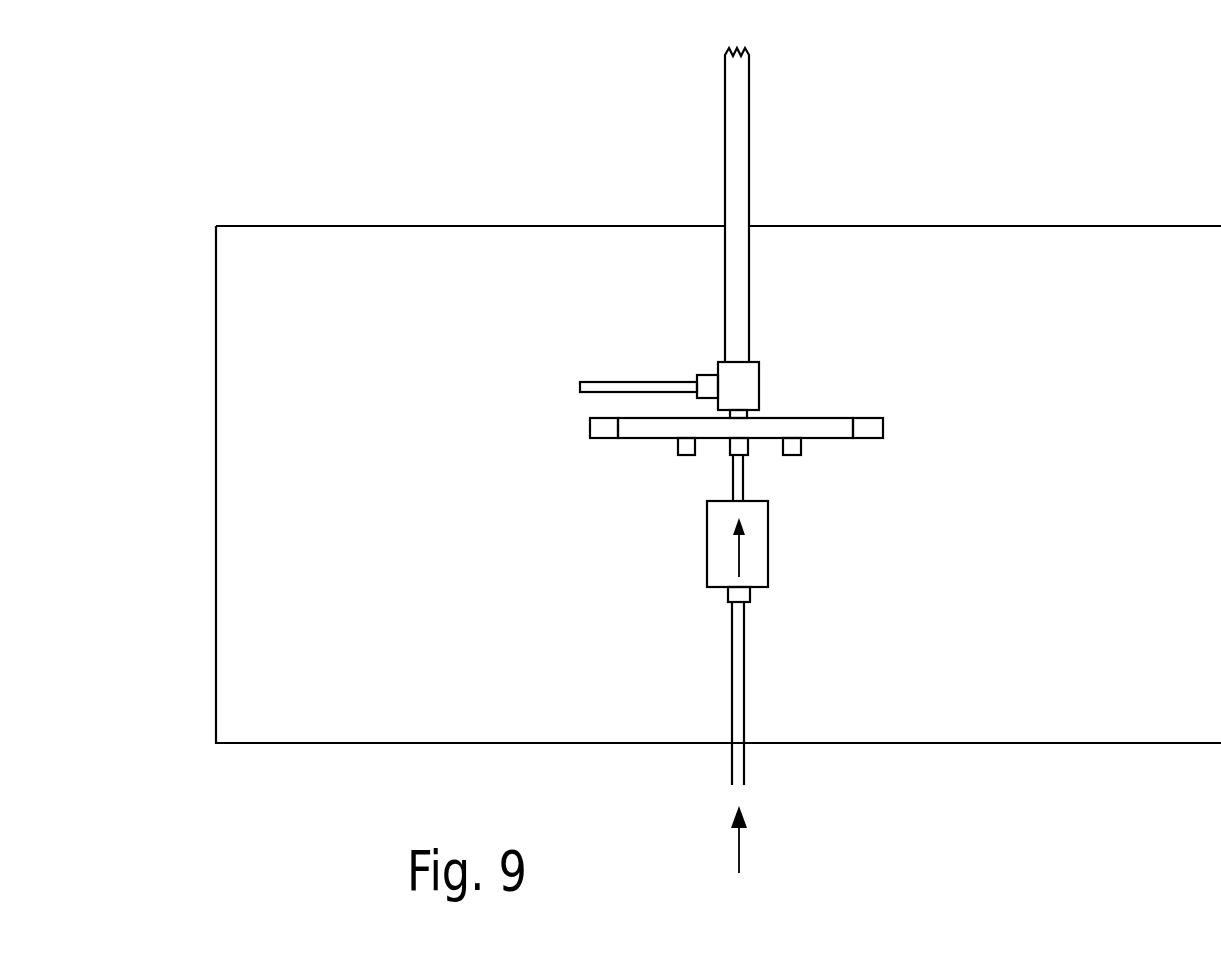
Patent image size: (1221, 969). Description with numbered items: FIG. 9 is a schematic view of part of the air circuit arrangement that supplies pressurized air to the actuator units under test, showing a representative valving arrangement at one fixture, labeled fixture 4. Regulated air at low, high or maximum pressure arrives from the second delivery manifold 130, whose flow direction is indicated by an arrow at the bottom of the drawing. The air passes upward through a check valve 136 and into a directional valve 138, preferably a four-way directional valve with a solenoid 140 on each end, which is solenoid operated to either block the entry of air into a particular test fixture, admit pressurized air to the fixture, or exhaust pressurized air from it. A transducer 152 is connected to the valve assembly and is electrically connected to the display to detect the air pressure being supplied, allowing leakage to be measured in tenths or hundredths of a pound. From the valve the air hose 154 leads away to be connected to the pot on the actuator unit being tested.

The substrate holder plate 4 is at (868, 448).
The second delivery manifold 130 is at (741, 843).
The check valve 136 is at (720, 565).
The directional valve 138 is at (815, 385).
The solenoid 140 is at (600, 432).
The transducer 152 is at (657, 385).
The air hose 154 is at (744, 128).